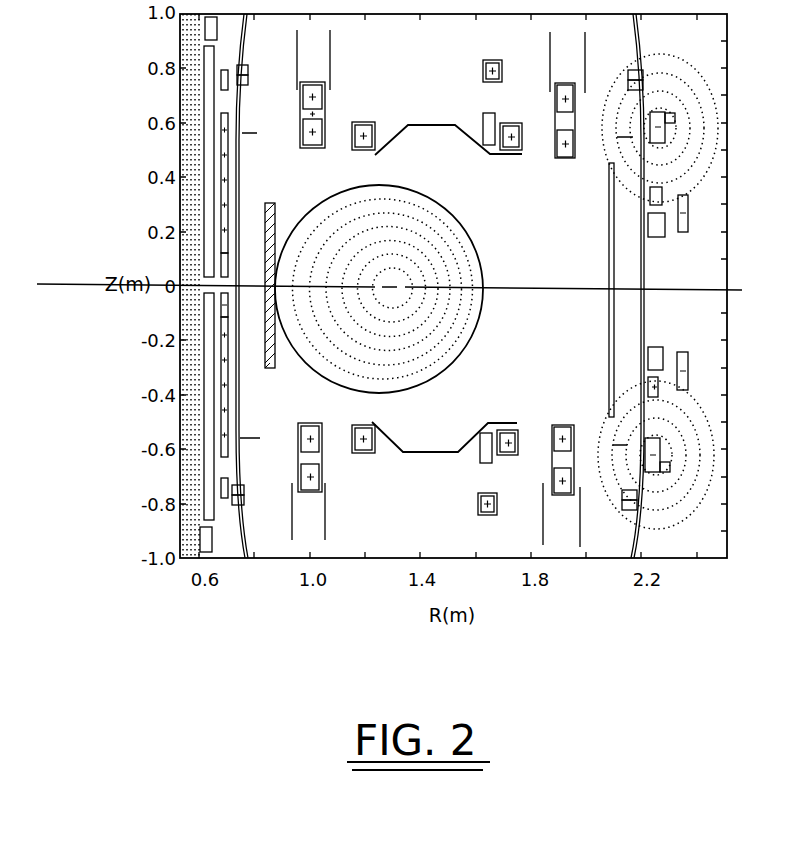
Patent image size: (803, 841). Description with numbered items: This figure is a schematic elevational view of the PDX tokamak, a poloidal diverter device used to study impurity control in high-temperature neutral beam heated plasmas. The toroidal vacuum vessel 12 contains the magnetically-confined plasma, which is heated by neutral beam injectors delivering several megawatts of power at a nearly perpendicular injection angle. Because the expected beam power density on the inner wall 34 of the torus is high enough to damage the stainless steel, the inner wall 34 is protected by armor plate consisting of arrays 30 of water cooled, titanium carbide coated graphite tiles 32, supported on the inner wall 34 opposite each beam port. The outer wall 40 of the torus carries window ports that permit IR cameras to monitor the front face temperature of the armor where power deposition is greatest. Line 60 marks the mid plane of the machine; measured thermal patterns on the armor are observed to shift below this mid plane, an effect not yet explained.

The toroidal vacuum vessel 12 is at (553, 225).
The arrays of graphite tiles 30 is at (266, 362).
The graphite tiles 32 is at (275, 208).
The inner wall 34 is at (242, 163).
The outer wall 40 is at (643, 268).
The mid plane line 60 is at (57, 284).